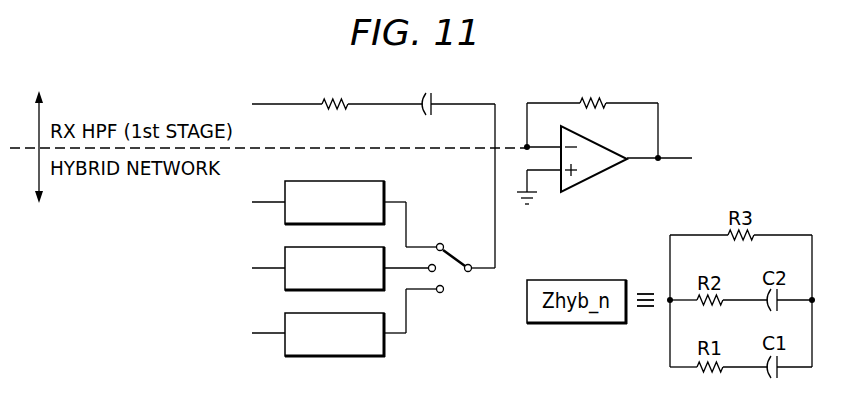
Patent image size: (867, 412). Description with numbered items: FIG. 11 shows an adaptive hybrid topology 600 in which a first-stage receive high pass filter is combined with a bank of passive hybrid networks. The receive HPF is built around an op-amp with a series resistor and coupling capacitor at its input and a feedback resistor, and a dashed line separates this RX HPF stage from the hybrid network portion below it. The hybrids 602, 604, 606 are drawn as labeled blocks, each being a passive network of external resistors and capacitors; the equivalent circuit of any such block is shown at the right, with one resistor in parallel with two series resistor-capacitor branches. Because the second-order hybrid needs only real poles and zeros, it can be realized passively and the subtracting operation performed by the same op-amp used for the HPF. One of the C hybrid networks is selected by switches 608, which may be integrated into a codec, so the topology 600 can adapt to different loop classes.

The topology 600 is at (759, 105).
The hybrid 602 is at (283, 211).
The hybrid 604 is at (283, 277).
The hybrid 606 is at (283, 342).
The switches 608 is at (453, 278).